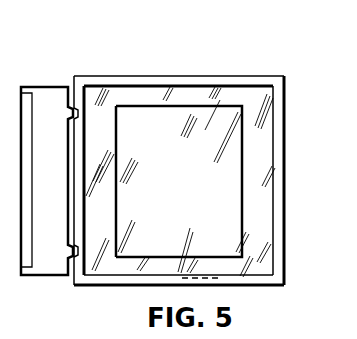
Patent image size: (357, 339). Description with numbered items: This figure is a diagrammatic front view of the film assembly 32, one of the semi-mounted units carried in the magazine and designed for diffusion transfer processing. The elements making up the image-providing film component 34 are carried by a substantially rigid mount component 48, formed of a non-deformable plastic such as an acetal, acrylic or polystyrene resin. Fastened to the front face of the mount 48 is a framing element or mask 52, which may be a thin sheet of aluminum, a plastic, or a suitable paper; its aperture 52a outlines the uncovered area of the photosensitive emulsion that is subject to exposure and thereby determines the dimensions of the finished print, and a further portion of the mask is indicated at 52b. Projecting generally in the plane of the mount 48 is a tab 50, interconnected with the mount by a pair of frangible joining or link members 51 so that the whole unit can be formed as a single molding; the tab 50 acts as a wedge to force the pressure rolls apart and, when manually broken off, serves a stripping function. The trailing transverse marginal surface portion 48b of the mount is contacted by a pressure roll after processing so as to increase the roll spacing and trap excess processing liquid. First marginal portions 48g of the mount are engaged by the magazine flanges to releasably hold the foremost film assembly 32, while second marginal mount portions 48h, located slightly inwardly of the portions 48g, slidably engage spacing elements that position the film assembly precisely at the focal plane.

The film assembly 32 is at (253, 68).
The image-providing film component 34 is at (206, 185).
The mount component 48 is at (285, 113).
The transverse marginal surface portion of the mount 48b is at (277, 195).
The first marginal portions of the mount 48g is at (203, 283).
The second marginal mount portions 48h is at (183, 280).
The tab 50 is at (36, 188).
The frangible joining members 51 is at (74, 247).
The mask 52 is at (105, 201).
The aperture of the mask 52a is at (117, 137).
The channel outer wall 52b is at (197, 95).